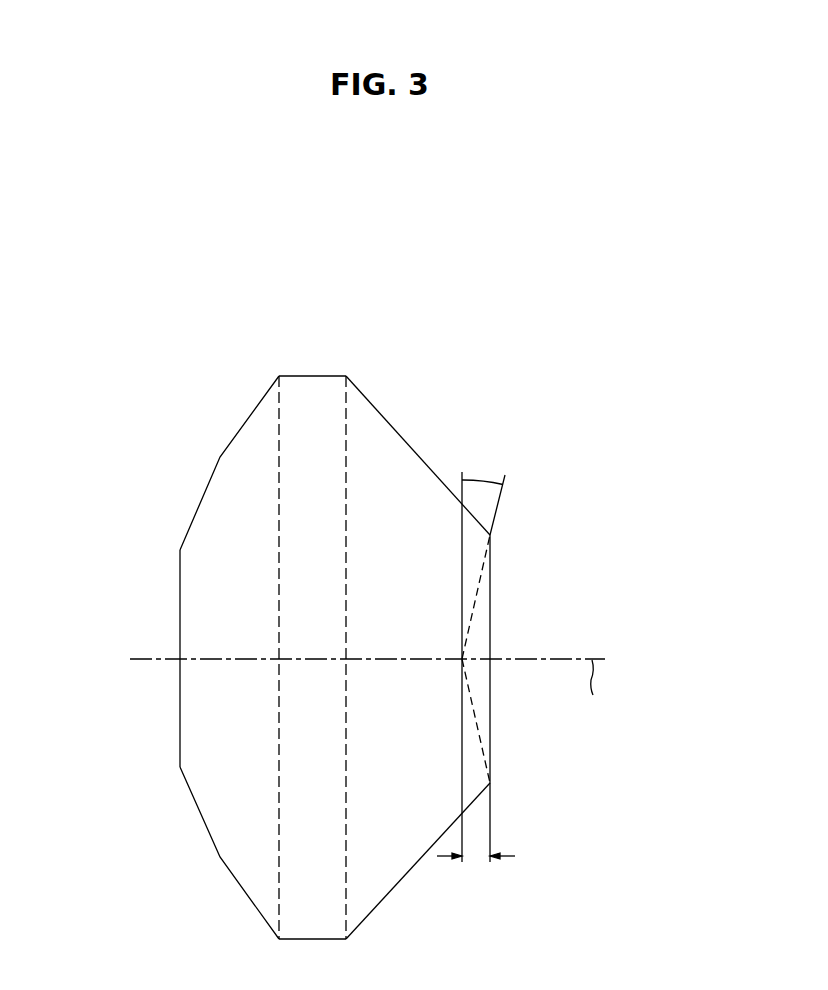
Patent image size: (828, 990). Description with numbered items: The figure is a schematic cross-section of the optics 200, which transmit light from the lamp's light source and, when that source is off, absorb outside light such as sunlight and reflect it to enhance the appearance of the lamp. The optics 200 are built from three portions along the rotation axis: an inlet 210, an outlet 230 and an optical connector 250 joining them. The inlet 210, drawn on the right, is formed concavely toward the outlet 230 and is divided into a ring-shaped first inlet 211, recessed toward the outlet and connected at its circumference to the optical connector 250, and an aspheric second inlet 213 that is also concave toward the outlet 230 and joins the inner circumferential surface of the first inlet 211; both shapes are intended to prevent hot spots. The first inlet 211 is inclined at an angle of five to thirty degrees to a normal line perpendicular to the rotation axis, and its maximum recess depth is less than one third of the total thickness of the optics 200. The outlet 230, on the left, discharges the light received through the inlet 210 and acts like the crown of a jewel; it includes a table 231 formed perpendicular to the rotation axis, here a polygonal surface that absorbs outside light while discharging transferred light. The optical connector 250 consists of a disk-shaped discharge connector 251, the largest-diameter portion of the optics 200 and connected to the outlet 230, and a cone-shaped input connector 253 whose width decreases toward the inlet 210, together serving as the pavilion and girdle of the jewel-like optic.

The optics 200 is at (701, 159).
The inlet 210 is at (607, 530).
The first inlet 211 is at (478, 587).
The second inlet 213 is at (465, 657).
The outlet 230 is at (158, 465).
The table 231 is at (180, 603).
The optical connector 250 is at (420, 250).
The discharge connector 251 is at (314, 405).
The input connector 253 is at (391, 410).